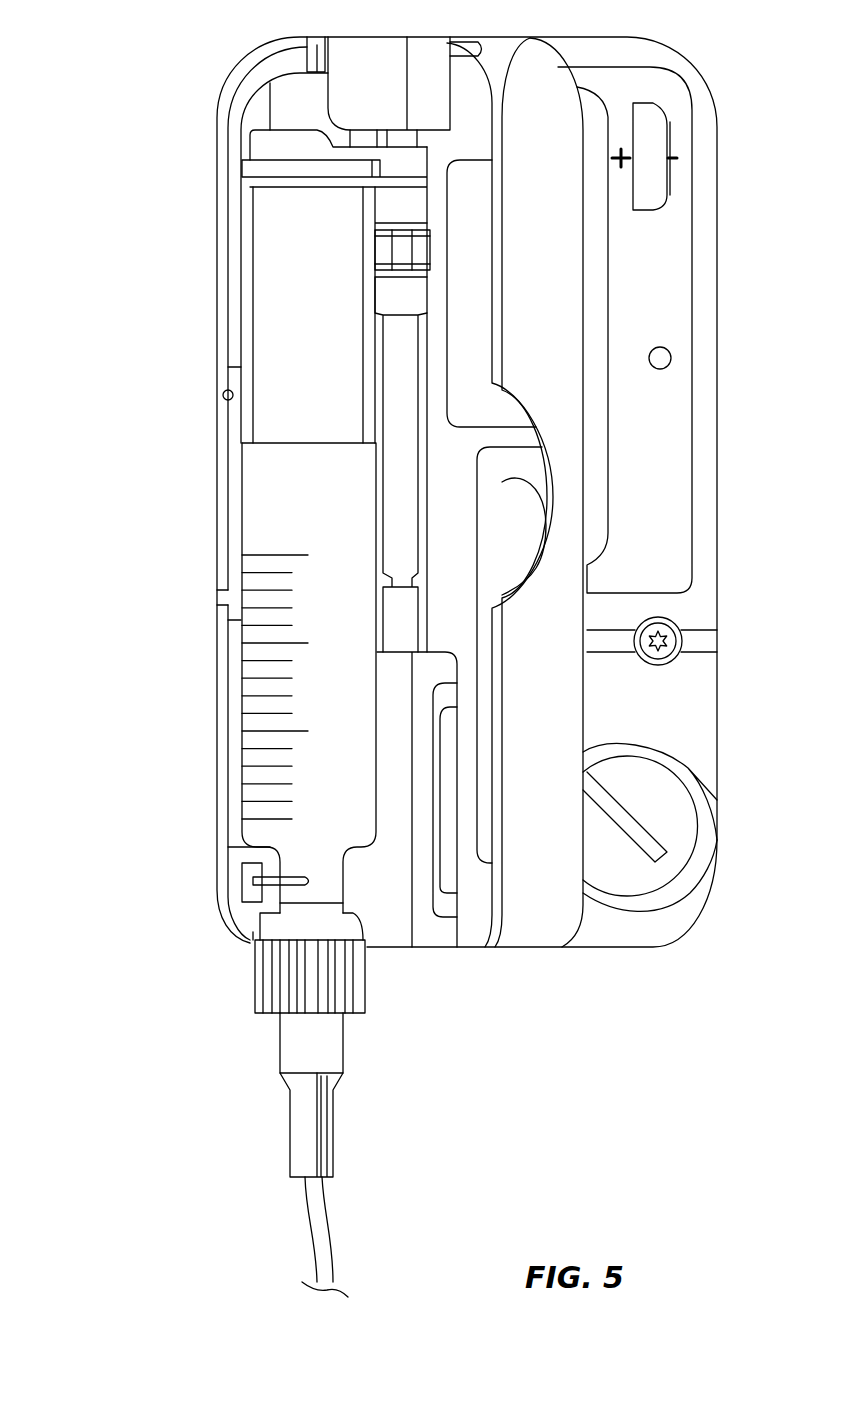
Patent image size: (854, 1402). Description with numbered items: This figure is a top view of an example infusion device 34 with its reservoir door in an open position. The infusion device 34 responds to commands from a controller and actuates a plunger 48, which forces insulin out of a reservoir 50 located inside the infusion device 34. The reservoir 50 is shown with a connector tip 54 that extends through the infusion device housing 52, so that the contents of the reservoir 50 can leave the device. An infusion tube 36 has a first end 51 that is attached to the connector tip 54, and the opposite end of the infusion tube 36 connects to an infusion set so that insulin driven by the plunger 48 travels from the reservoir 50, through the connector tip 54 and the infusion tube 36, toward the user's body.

The infusion device 34 is at (108, 261).
The plunger 48 is at (270, 343).
The reservoir 50 is at (270, 478).
The infusion device housing 52 is at (722, 364).
The connector tip 54 is at (307, 922).
The first end 51 is at (297, 1140).
The infusion tube 36 is at (317, 1238).